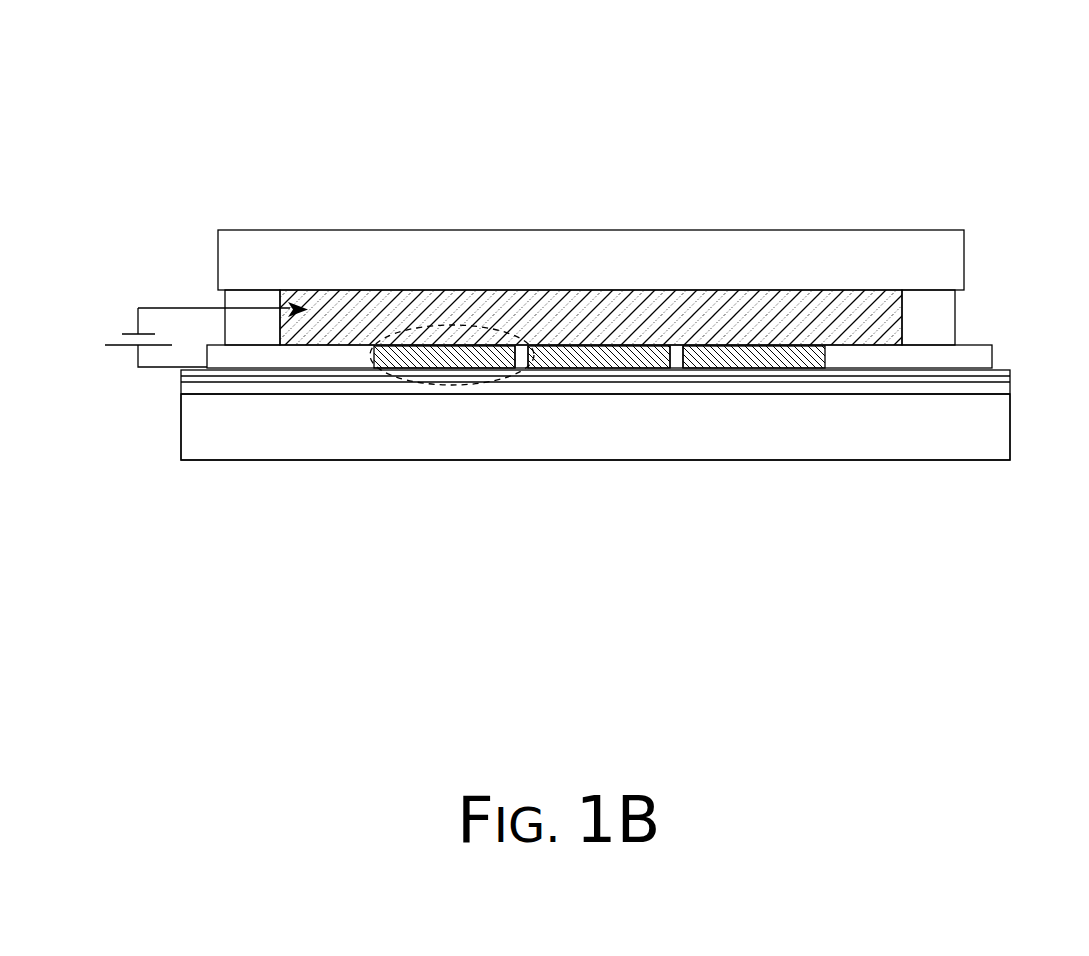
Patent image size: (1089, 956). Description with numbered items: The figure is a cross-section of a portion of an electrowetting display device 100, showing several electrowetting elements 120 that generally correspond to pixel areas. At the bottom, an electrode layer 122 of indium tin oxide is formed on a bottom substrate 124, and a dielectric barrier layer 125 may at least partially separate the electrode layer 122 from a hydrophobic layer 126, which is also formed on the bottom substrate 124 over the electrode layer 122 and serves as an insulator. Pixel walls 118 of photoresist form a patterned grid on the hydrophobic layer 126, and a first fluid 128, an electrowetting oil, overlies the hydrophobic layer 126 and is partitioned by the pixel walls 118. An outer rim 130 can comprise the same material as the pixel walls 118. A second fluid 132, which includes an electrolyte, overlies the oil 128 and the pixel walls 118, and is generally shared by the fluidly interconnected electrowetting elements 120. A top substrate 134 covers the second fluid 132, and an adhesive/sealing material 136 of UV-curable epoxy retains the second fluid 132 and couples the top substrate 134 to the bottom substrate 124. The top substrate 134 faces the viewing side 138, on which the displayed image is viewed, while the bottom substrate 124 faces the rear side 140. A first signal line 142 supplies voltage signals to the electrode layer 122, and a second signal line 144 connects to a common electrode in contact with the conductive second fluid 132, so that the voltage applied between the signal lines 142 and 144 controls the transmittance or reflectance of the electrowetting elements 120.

The electrowetting display device 100 is at (798, 76).
The pixel walls 118 is at (677, 370).
The electrowetting elements 120 is at (448, 385).
The electrode layer 122 is at (181, 390).
The bottom substrate 124 is at (251, 442).
The dielectric barrier layer 125 is at (1008, 372).
The hydrophobic layer 126 is at (181, 373).
The first fluid 128 is at (735, 370).
The outer rim 130 is at (925, 371).
The second fluid 132 is at (660, 290).
The top substrate 134 is at (285, 269).
The adhesive/sealing material 136 is at (957, 316).
The viewing side 138 is at (404, 176).
The rear side 140 is at (380, 500).
The first signal line 142 is at (138, 366).
The second signal line 144 is at (202, 307).